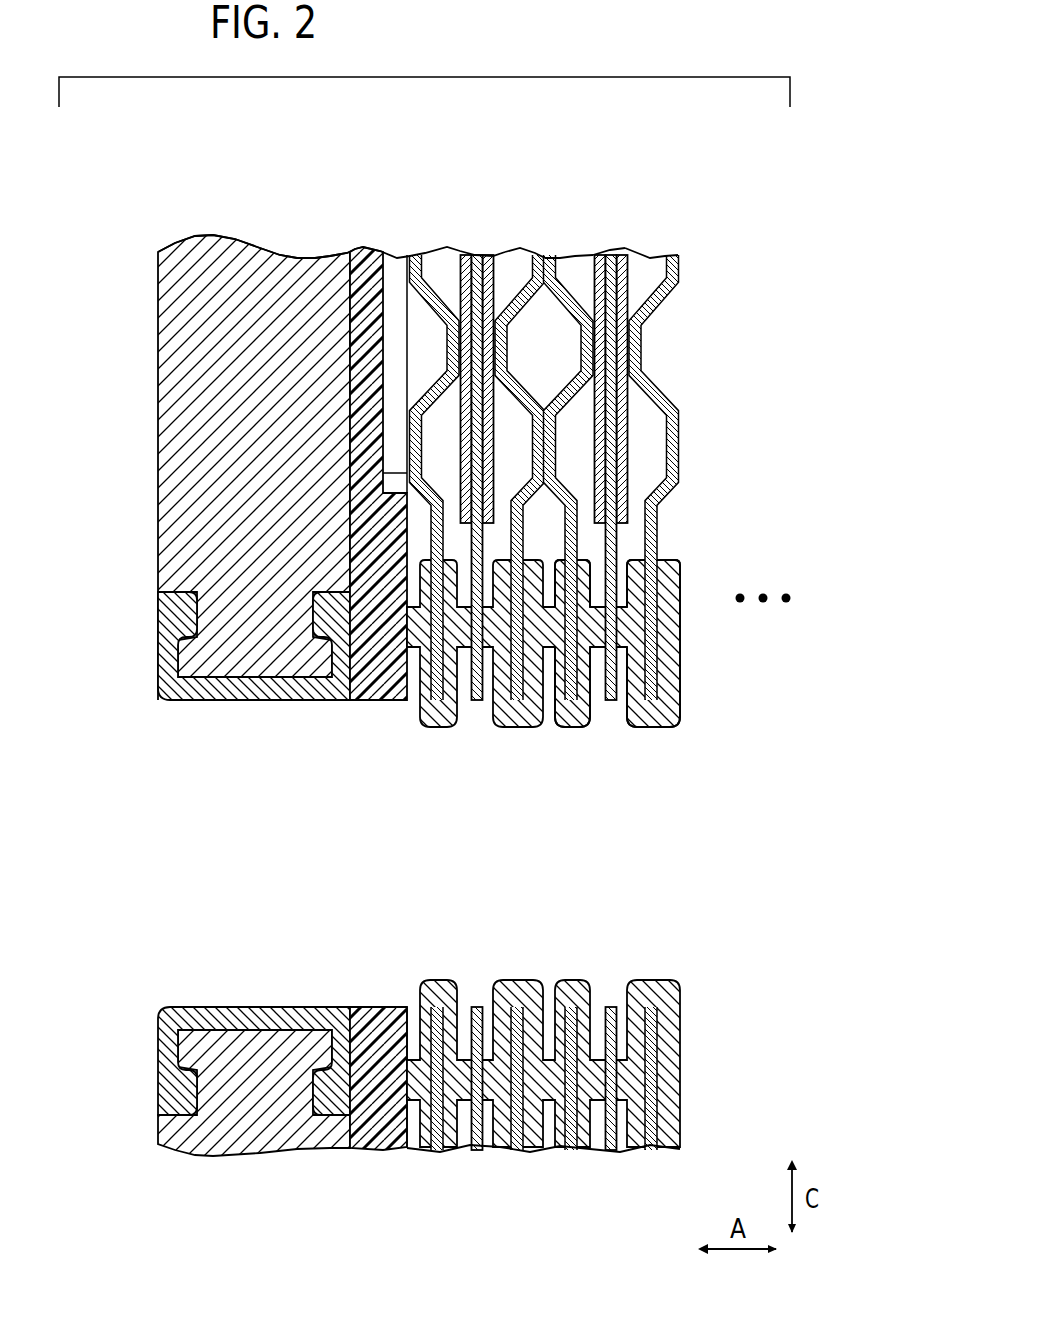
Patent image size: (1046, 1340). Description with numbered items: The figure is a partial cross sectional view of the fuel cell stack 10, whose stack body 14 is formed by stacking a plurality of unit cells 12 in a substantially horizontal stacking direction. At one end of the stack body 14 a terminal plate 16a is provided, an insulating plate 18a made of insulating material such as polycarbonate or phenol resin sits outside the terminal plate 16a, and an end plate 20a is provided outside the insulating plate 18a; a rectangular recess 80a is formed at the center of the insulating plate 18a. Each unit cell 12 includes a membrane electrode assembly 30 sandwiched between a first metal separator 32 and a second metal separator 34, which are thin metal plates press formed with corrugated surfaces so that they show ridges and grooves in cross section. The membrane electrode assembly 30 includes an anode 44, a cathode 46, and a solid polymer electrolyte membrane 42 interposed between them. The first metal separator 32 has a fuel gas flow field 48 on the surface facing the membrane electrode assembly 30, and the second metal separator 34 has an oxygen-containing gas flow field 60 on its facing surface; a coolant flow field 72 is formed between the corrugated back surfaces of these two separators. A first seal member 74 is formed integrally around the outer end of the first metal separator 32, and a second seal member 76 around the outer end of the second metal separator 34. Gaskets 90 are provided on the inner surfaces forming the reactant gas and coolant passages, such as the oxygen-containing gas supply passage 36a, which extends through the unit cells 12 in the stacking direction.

The fuel cell stack 10 is at (92, 219).
The unit cell 12 is at (598, 646).
The stack body 14 is at (598, 621).
The terminal plate 16a is at (408, 470).
The insulating plate 18a is at (344, 353).
The end plate 20a is at (141, 377).
The membrane electrode assembly 30 is at (688, 668).
The first metal separator 32 is at (676, 255).
The second metal separator 34 is at (550, 253).
The oxygen-containing gas supply passage 36a is at (472, 853).
The solid polymer electrolyte membrane 42 is at (610, 478).
The anode 44 is at (627, 505).
The cathode 46 is at (598, 457).
The fuel gas flow field 48 is at (642, 285).
The oxygen-containing gas flow field 60 is at (582, 267).
The coolant flow field 72 is at (543, 345).
The first seal member 74 is at (659, 743).
The second seal member 76 is at (565, 738).
The rectangular recess 80a is at (406, 358).
The gasket 90 is at (165, 718).